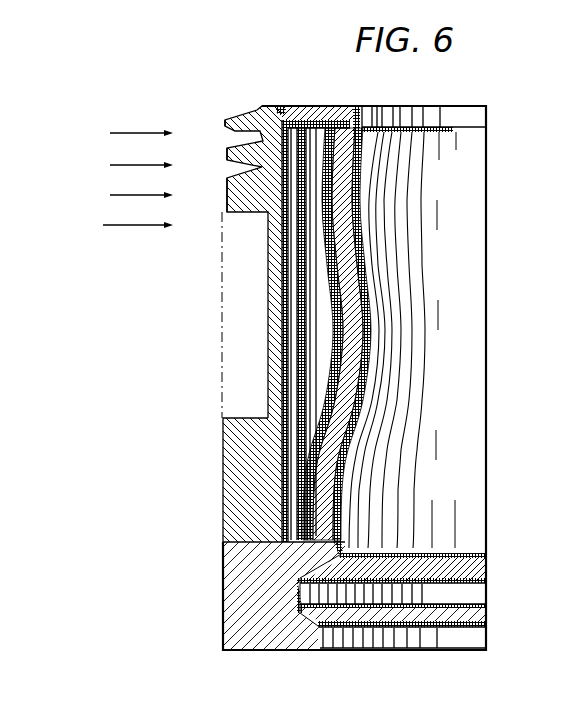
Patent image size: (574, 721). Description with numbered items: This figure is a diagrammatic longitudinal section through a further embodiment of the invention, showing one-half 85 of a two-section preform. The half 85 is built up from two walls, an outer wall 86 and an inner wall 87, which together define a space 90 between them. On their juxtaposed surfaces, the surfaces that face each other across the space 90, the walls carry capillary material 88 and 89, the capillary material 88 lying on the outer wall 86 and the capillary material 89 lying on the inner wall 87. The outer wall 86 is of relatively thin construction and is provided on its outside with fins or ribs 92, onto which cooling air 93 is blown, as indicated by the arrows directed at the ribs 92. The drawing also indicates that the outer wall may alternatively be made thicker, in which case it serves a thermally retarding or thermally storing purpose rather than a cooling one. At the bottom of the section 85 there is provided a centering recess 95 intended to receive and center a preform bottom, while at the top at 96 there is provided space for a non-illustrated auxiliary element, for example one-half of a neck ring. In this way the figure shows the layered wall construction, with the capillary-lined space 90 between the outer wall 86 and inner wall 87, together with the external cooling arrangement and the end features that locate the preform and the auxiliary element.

The one-half of two-section preform 85 is at (245, 105).
The fins or ribs 92 is at (238, 175).
The cooling air 93 is at (110, 133).
The capillary material 89 is at (335, 222).
The outer wall 86 is at (272, 283).
The capillary material 88 is at (278, 329).
The space 90 is at (276, 372).
The inner wall 87 is at (357, 333).
The space for auxiliary element 96 is at (450, 117).
The centering recess 95 is at (387, 600).